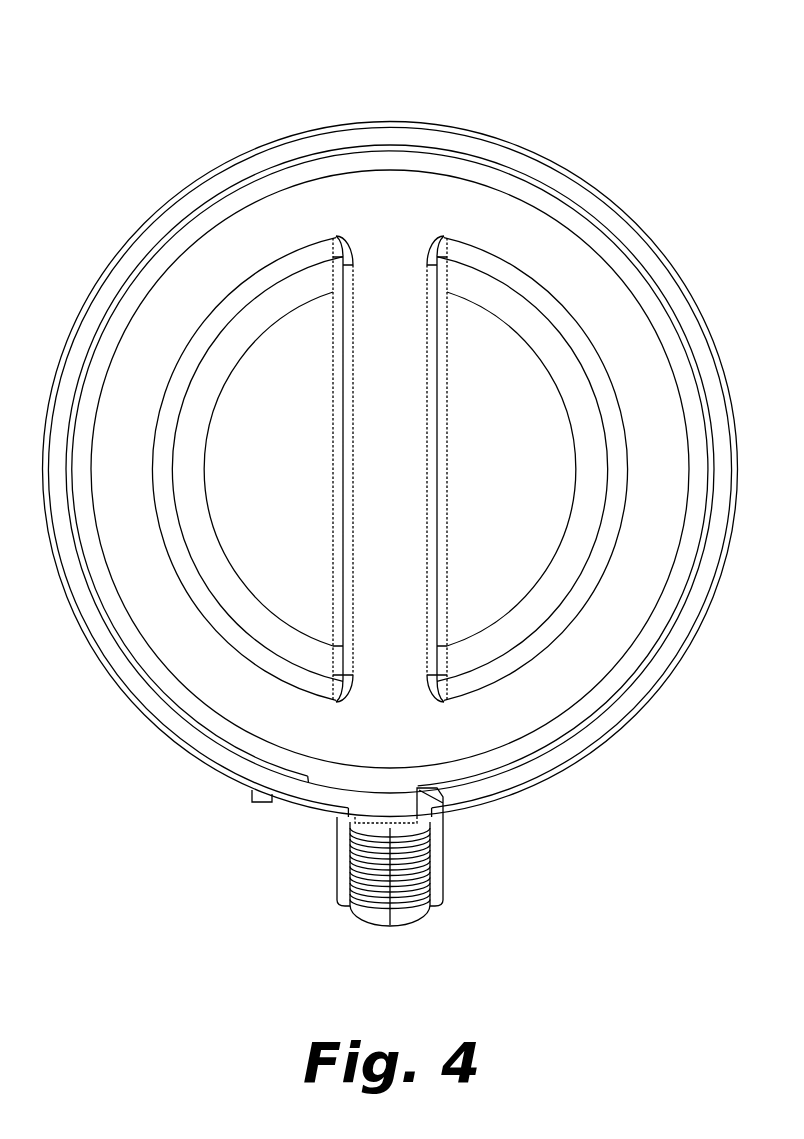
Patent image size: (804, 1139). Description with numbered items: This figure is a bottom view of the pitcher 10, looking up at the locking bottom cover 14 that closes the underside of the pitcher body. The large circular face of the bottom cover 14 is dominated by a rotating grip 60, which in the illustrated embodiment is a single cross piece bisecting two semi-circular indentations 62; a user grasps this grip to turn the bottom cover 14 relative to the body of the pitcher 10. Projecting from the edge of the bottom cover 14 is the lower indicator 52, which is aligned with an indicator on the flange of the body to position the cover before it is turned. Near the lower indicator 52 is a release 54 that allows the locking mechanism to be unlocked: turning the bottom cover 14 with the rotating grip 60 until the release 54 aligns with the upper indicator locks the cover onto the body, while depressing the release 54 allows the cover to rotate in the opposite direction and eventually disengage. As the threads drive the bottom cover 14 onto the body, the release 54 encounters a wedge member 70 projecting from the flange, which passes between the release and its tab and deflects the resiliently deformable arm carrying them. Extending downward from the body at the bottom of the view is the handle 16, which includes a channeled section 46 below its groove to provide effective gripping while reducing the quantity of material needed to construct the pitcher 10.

The pitcher 10 is at (631, 74).
The locking bottom cover 14 is at (262, 144).
The handle 16 is at (443, 858).
The channeled section 46 is at (385, 901).
The lower indicator 52 is at (257, 800).
The release 54 is at (385, 811).
The rotating grip 60 is at (385, 385).
The semi-circular indentations 62 is at (283, 503).
The wedge member 70 is at (432, 800).